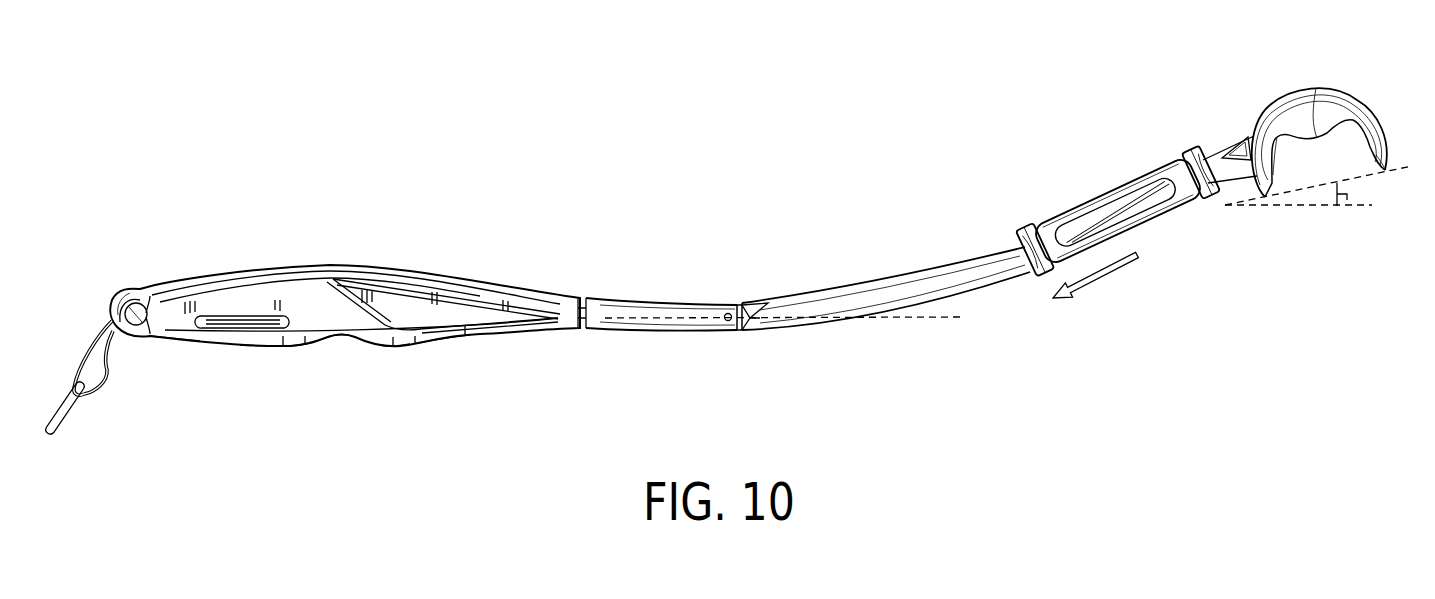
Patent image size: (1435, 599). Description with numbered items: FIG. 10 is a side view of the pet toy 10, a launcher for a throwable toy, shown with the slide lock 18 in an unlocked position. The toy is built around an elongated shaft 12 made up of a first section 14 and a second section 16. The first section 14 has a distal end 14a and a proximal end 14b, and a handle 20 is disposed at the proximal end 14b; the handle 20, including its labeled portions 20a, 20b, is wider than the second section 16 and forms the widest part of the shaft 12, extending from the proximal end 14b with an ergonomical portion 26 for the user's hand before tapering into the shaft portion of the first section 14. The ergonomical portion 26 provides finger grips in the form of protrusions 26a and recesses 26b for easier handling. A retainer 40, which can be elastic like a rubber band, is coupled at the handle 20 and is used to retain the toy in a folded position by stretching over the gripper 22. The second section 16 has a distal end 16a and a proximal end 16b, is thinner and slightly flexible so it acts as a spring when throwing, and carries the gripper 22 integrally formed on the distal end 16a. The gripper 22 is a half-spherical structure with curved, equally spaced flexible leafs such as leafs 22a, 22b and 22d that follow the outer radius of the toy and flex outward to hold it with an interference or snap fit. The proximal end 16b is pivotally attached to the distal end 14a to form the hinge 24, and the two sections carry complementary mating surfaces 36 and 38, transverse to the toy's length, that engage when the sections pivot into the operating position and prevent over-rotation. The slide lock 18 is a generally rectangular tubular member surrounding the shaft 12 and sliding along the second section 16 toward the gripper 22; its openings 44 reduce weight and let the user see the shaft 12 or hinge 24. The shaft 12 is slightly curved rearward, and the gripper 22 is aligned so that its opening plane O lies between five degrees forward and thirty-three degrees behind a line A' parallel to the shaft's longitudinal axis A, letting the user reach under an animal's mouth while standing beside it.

The pet toy 10 is at (922, 137).
The elongated shaft 12 is at (584, 299).
The first section 14 is at (318, 268).
The distal end of the first section 14a is at (722, 304).
The proximal end of the first section 14b is at (126, 290).
The second section 16 is at (928, 274).
The distal end of the second section 16a is at (1232, 140).
The proximal end of the second section 16b is at (780, 300).
The slide lock 18 is at (1160, 158).
The handle 20 is at (393, 346).
The lower handle contour portion 20a is at (420, 343).
The lower handle contour portion 20b is at (336, 336).
The gripper 22 is at (1355, 95).
The flexible leaf 22a is at (1290, 172).
The flexible leaf 22b is at (1388, 150).
The flexible leaf 22d is at (1316, 88).
The hinge 24 is at (727, 322).
The ergonomical portion 26 is at (307, 345).
The protrusions 26a is at (276, 346).
The recesses 26b is at (165, 341).
The complementary mating surface 36 is at (743, 300).
The complementary mating surface 38 is at (746, 326).
The retainer 40 is at (82, 323).
The openings 44 is at (1162, 225).
The longitudinal axis A is at (782, 355).
The line parallel to the longitudinal axis A' is at (1298, 230).
The opening plane O is at (1399, 174).